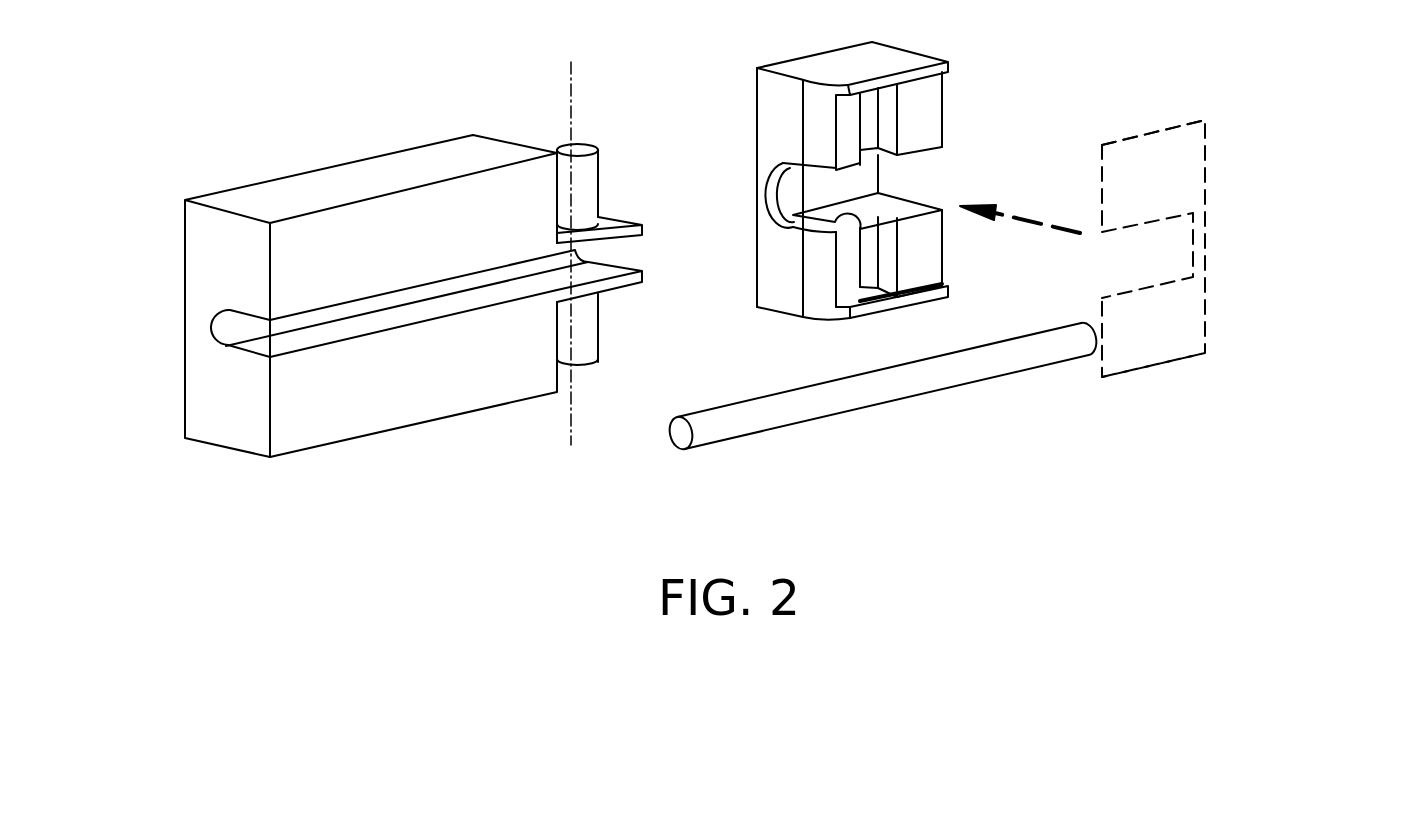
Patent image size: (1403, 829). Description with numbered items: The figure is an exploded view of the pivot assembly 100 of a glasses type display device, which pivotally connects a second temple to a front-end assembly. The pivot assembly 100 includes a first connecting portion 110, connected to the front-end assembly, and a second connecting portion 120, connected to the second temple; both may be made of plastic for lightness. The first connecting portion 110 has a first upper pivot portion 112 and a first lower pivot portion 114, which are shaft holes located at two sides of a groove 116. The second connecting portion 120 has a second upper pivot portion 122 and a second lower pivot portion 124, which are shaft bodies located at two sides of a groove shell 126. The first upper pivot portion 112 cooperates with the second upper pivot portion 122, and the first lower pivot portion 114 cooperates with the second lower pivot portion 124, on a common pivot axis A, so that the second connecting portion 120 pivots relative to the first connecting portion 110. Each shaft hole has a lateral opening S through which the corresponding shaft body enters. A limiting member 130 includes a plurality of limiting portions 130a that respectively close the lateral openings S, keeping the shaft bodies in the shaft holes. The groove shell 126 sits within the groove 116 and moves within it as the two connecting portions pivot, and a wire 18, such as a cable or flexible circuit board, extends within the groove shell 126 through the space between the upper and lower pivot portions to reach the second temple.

The pivot assembly 100 is at (958, 27).
The first connecting portion 110 is at (836, 62).
The first upper pivot portion 112 is at (890, 117).
The first lower pivot portion 114 is at (900, 245).
The groove 116 is at (795, 187).
The second connecting portion 120 is at (373, 172).
The second upper pivot portion 122 is at (585, 173).
The second lower pivot portion 124 is at (585, 343).
The groove shell 126 is at (628, 283).
The limiting member 130 is at (1210, 231).
The limiting portion 130a is at (1153, 165).
The wire 18 is at (903, 388).
The lateral opening S is at (898, 142).
The pivot axis A is at (572, 235).